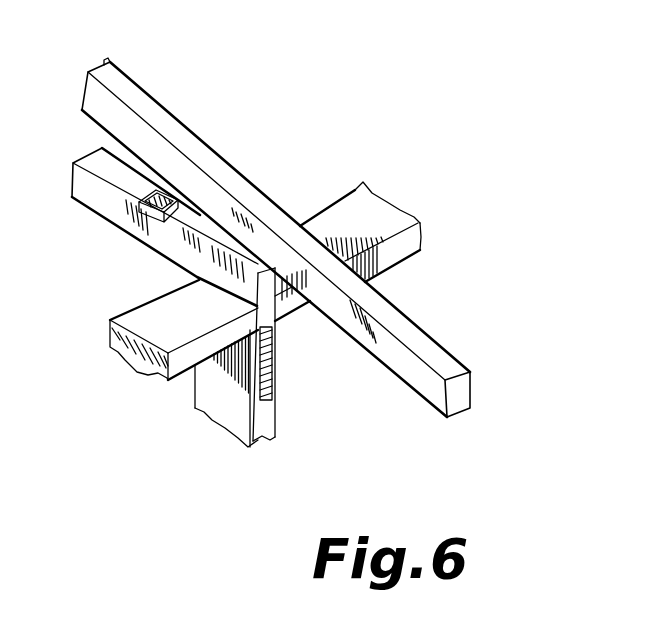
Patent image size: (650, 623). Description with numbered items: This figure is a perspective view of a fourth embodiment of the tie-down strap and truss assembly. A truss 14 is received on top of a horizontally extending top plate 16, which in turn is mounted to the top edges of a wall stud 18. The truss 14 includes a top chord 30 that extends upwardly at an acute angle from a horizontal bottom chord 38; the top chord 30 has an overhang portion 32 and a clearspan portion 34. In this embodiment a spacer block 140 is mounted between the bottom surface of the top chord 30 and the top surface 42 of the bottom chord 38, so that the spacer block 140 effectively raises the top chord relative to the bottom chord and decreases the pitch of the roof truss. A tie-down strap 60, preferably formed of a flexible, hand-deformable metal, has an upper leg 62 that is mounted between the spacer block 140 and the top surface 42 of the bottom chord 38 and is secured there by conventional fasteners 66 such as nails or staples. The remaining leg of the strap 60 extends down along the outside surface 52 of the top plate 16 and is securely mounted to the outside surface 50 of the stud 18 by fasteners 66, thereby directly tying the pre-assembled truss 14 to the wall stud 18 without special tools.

The truss 14 is at (279, 209).
The top plate 16 is at (283, 269).
The stud 18 is at (207, 410).
The top chord 30 is at (242, 173).
The overhang portion 32 is at (431, 344).
The clearspan portion 34 is at (125, 77).
The bottom chord 38 is at (155, 214).
The top surface of the bottom chord 42 is at (96, 157).
The outside surface of the stud 50 is at (291, 354).
The outside surface of the top plate 52 is at (409, 258).
The tie-down strap 60 is at (135, 248).
The upper leg 62 is at (170, 223).
The fasteners 66 is at (276, 372).
The spacer block 140 is at (234, 205).